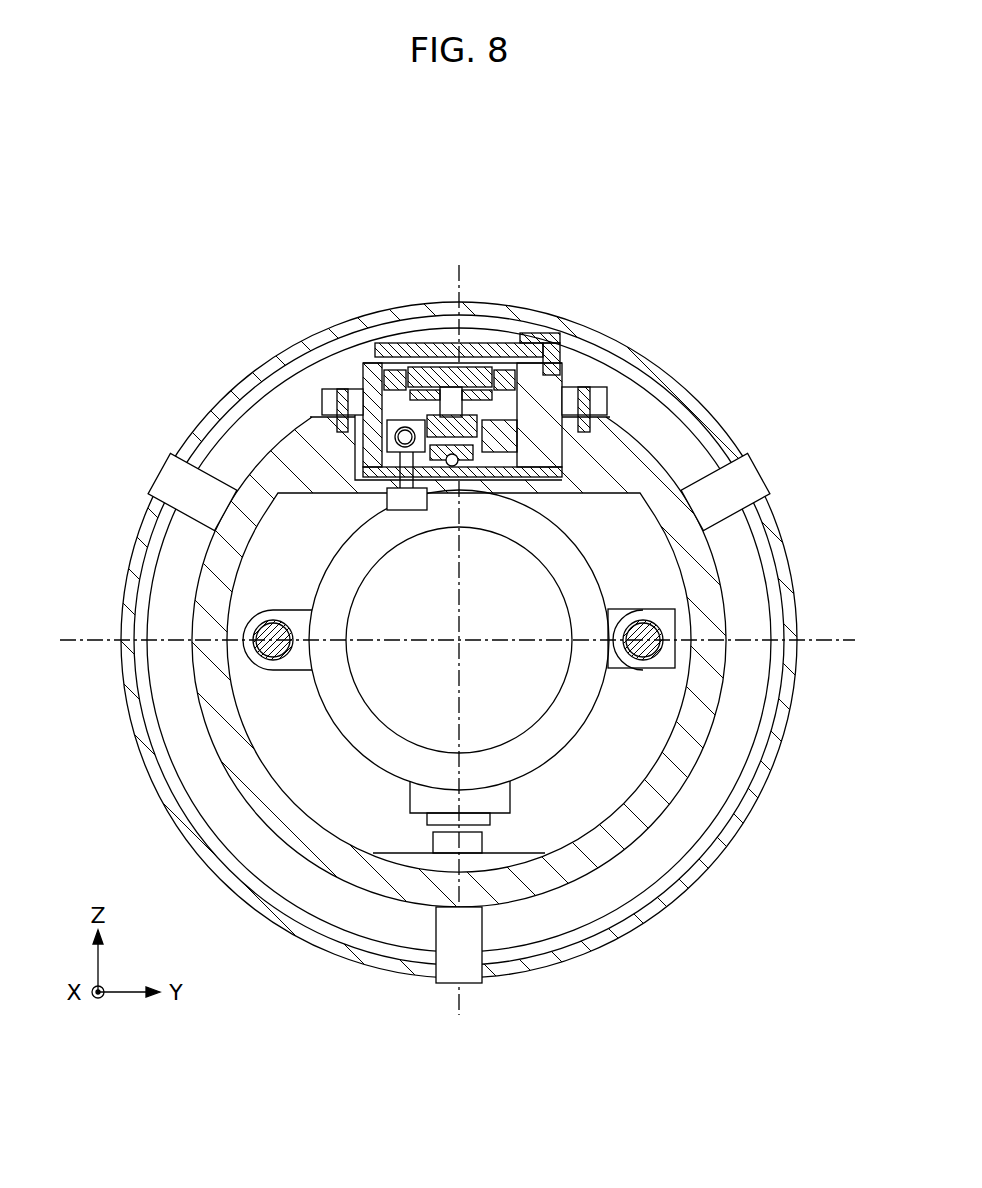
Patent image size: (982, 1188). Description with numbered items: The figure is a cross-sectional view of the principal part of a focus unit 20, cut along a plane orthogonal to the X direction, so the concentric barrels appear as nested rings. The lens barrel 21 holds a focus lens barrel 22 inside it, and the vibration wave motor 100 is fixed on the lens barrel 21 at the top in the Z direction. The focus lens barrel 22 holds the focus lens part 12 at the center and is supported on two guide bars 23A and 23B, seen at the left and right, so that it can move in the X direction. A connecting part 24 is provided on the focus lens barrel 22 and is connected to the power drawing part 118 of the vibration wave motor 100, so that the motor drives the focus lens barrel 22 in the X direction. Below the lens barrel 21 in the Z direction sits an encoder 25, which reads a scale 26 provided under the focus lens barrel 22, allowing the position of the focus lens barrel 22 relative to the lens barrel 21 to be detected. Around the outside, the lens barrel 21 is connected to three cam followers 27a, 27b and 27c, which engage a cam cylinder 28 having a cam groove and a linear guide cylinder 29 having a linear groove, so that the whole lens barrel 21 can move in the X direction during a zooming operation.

The focus unit 20 is at (141, 269).
The focus lens part 12 is at (545, 590).
The lens barrel 21 is at (283, 460).
The focus lens barrel 22 is at (343, 567).
The guide bar 23A is at (273, 657).
The guide bar 23B is at (640, 657).
The connecting part 24 is at (388, 503).
The encoder 25 is at (445, 840).
The scale 26 is at (490, 818).
The cam follower 27a is at (176, 481).
The cam follower 27b is at (752, 480).
The cam follower 27c is at (443, 972).
The cam cylinder 28 is at (148, 511).
The linear guide cylinder 29 is at (150, 549).
The vibration wave motor 100 is at (540, 383).
The power drawing part 118 is at (298, 423).